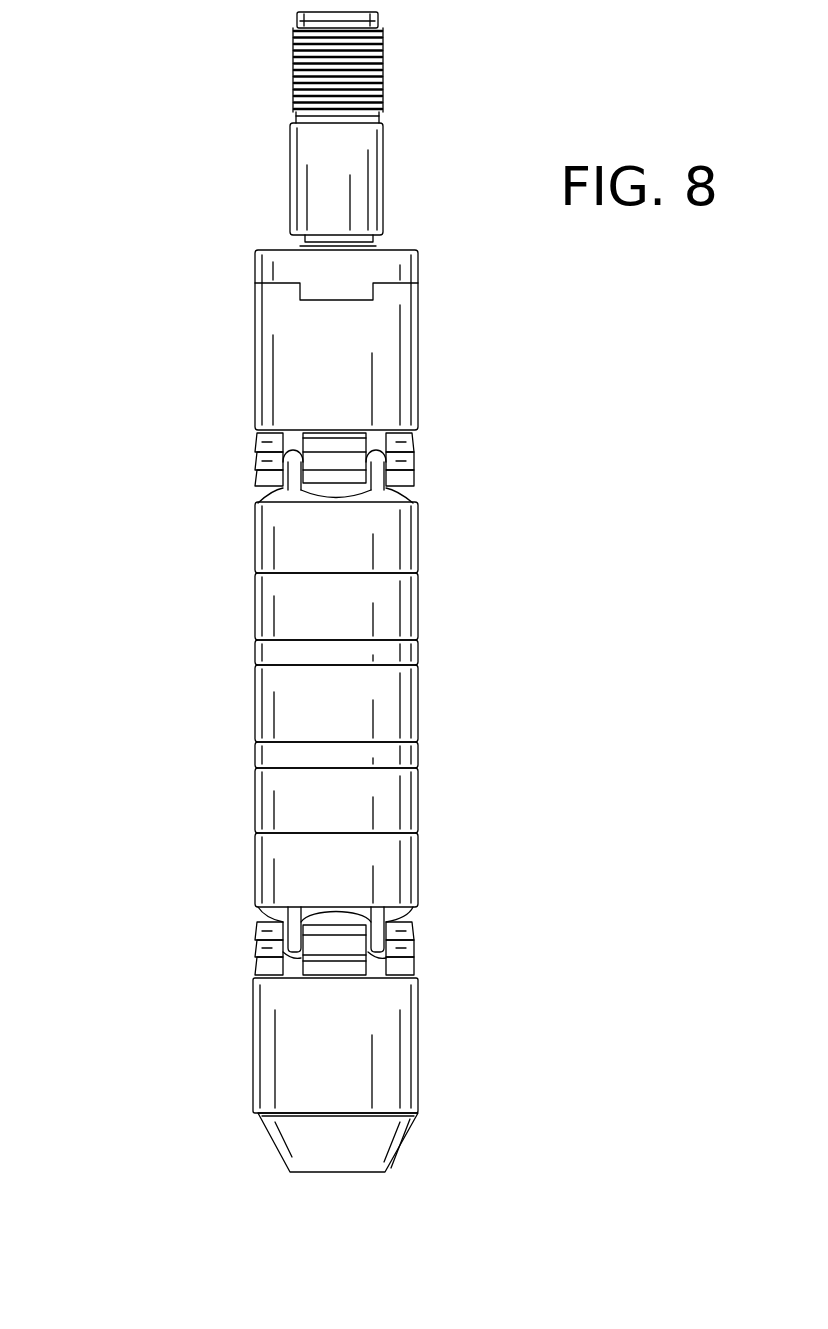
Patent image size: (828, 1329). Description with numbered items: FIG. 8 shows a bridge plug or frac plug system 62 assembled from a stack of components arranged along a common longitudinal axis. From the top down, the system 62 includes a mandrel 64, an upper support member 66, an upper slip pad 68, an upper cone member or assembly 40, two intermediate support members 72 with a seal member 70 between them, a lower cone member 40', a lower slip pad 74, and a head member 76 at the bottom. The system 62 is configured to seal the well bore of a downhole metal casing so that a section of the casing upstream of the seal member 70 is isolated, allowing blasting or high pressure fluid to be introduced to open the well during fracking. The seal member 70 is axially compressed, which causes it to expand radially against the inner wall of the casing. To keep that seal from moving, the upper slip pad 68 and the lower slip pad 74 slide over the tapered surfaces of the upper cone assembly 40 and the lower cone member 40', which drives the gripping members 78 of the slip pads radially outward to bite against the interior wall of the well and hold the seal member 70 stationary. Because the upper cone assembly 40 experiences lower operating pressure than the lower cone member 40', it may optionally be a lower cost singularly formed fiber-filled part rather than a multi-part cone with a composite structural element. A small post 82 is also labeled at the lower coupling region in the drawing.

The bridge plug or frac plug system 62 is at (146, 467).
The mandrel 64 is at (290, 157).
The upper support member 66 is at (272, 322).
The upper slip pad 68 is at (421, 444).
The gripping members 78 is at (257, 457).
The upper cone member or assembly 40 is at (405, 635).
The intermediate support members 72 is at (380, 600).
The seal member 70 is at (380, 688).
The lower cone member 40' is at (408, 860).
The coupling post 82 is at (300, 920).
The lower slip pad 74 is at (430, 950).
The head member 76 is at (386, 1084).